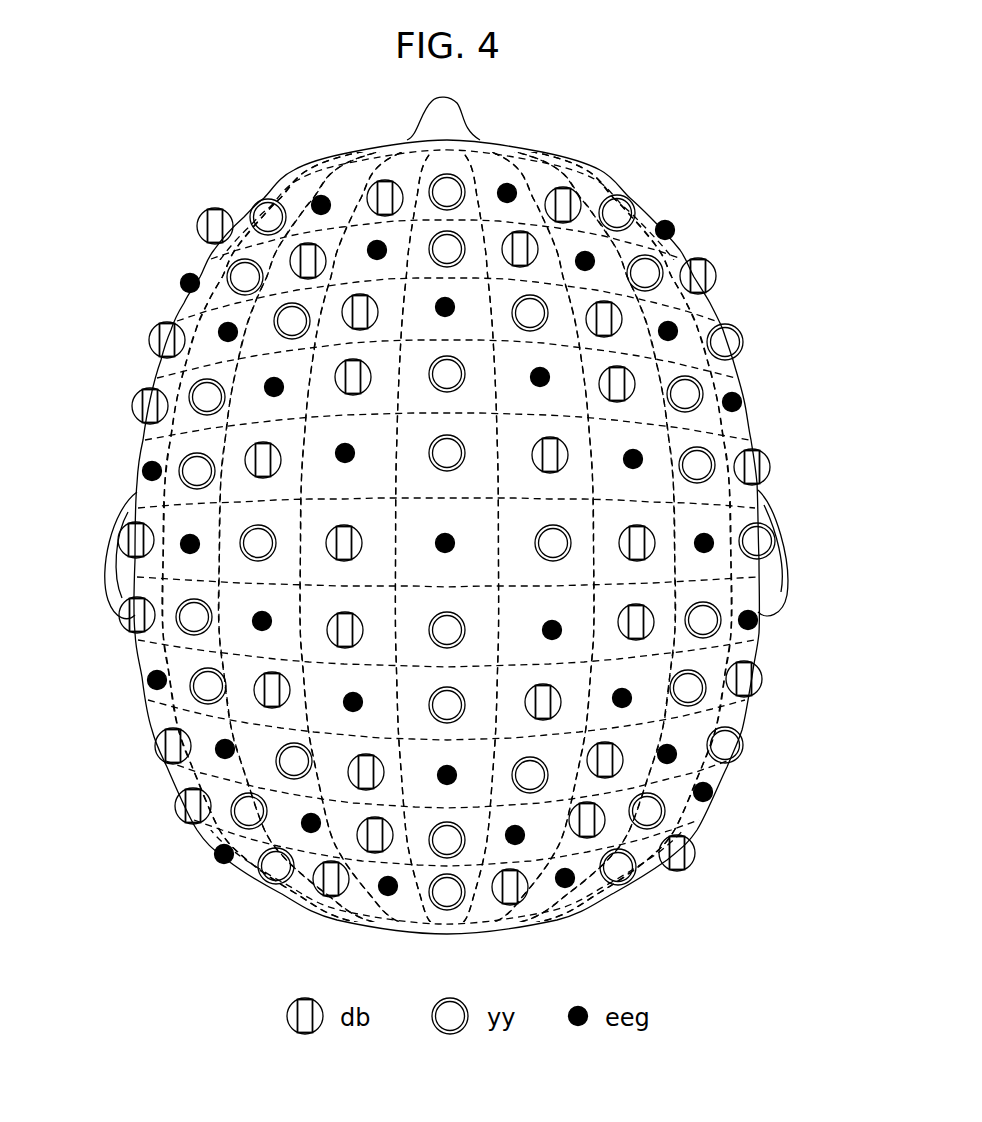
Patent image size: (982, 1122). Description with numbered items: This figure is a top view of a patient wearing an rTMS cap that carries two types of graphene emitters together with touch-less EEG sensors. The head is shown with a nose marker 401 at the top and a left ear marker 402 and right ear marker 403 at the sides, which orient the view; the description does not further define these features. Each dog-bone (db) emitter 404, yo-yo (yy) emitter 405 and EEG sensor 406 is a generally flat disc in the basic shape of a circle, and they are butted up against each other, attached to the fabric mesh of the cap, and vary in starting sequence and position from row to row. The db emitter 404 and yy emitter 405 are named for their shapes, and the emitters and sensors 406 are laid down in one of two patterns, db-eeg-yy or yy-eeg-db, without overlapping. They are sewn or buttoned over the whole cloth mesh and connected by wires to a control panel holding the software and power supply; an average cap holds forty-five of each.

The nose marker 401 is at (447, 125).
The left ear marker 402 is at (117, 593).
The right ear marker 403 is at (777, 583).
The dog-bone (db) emitter 404 is at (754, 683).
The yo-yo (yy) emitter 405 is at (727, 745).
The EEG sensor 406 is at (714, 789).